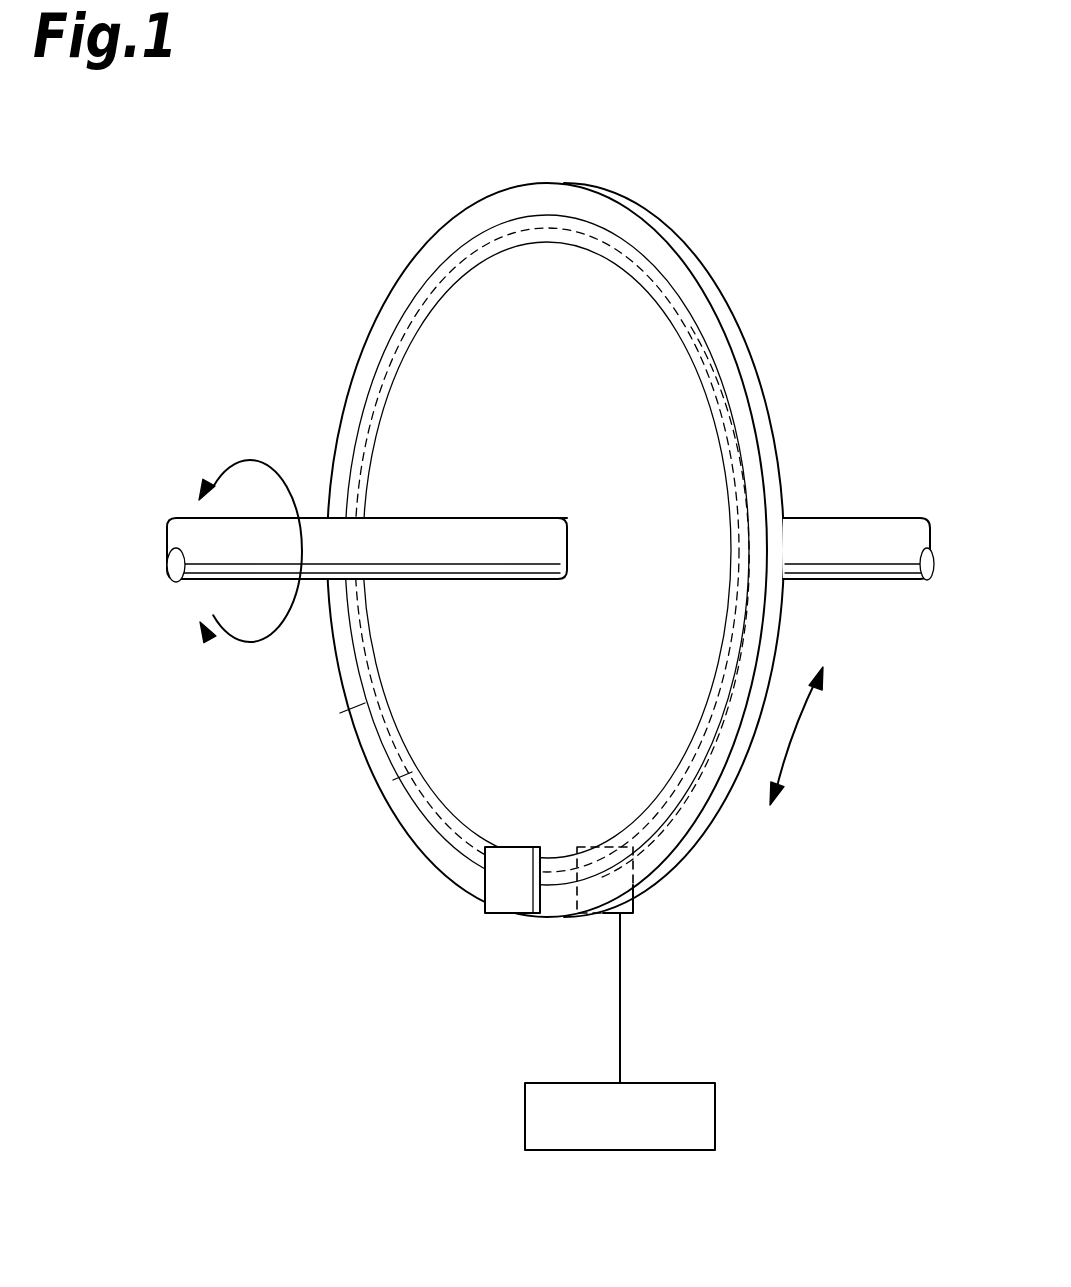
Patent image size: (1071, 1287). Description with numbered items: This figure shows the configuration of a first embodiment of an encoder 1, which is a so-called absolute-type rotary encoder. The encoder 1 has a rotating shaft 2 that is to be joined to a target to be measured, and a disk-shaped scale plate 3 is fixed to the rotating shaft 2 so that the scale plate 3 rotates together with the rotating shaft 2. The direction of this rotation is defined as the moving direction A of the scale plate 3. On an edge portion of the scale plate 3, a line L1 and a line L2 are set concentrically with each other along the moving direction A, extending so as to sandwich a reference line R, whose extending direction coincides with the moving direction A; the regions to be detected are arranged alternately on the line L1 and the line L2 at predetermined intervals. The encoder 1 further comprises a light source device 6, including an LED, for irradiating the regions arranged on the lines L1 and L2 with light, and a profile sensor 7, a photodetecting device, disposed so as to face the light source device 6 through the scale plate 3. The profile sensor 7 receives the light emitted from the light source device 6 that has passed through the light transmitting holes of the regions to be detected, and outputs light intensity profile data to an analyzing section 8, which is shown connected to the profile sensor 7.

The encoder 1 is at (762, 193).
The rotating shaft 2 is at (866, 530).
The scale plate 3 is at (357, 357).
The light source device 6 is at (502, 885).
The profile sensor 7 is at (660, 887).
The analyzing section 8 is at (715, 1113).
The reference line R is at (687, 327).
The line L1 is at (387, 790).
The line L2 is at (340, 712).
The moving direction A is at (800, 738).